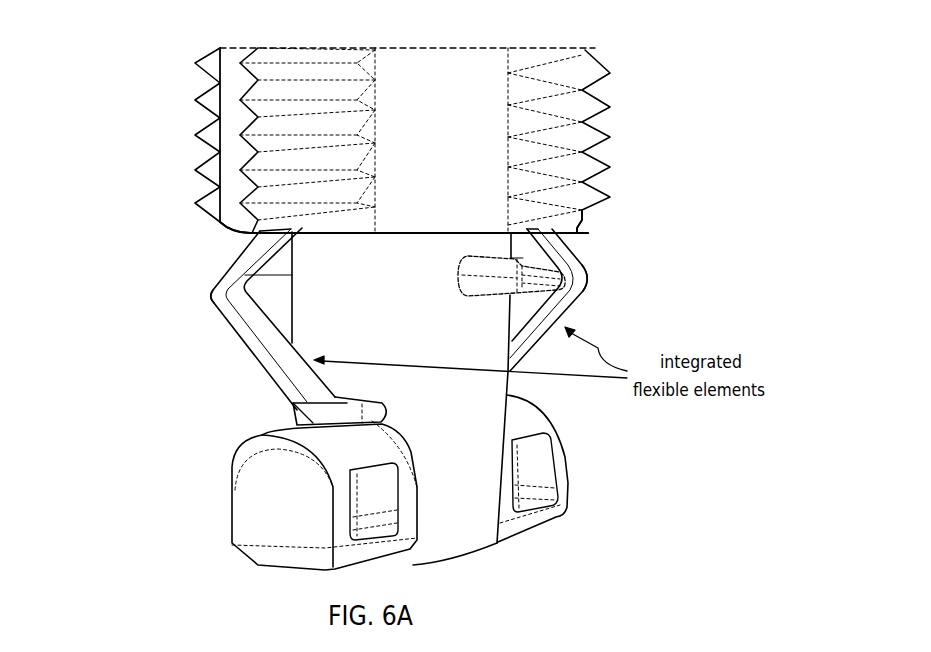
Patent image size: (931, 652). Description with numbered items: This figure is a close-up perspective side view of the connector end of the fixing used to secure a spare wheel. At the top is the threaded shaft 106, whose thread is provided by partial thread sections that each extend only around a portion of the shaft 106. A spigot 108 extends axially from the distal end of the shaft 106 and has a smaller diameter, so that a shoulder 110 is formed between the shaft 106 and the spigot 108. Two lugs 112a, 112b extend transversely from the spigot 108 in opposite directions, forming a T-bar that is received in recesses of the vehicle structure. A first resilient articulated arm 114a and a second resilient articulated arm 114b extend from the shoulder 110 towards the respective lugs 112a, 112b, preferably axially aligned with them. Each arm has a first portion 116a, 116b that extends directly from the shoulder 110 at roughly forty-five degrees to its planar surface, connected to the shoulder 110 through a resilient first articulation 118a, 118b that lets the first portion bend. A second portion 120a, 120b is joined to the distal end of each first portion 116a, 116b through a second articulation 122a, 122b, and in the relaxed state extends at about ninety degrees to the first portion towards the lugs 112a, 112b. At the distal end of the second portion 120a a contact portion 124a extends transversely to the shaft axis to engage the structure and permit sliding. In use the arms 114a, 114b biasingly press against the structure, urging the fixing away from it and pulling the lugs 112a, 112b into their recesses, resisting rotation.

The shaft 106 is at (467, 130).
The spigot 108 is at (455, 480).
The shoulder 110 is at (455, 232).
The lug 112a is at (297, 497).
The lug 112b is at (523, 417).
The first resilient articulated arm 114a is at (219, 327).
The second resilient articulated arm 114b is at (673, 300).
The first portion 116a is at (243, 257).
The first portion 116b is at (553, 237).
The first articulation 118a is at (257, 232).
The first articulation 118b is at (580, 225).
The second portion 120a is at (254, 347).
The second portion 120b is at (568, 316).
The second articulation 122a is at (213, 283).
The second articulation 122b is at (587, 268).
The contact portion 124a is at (292, 405).